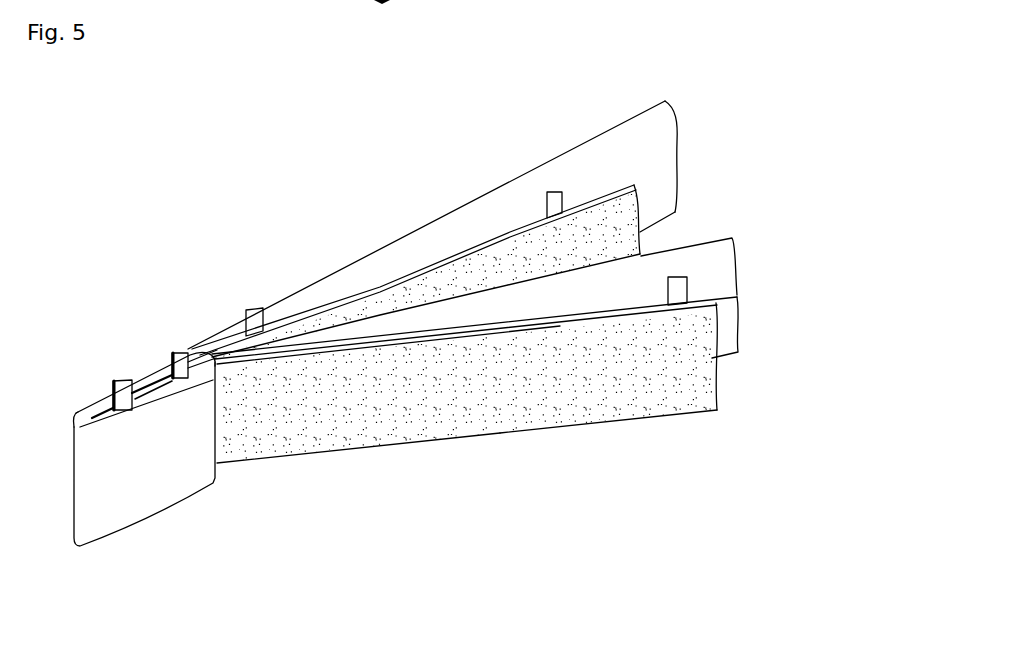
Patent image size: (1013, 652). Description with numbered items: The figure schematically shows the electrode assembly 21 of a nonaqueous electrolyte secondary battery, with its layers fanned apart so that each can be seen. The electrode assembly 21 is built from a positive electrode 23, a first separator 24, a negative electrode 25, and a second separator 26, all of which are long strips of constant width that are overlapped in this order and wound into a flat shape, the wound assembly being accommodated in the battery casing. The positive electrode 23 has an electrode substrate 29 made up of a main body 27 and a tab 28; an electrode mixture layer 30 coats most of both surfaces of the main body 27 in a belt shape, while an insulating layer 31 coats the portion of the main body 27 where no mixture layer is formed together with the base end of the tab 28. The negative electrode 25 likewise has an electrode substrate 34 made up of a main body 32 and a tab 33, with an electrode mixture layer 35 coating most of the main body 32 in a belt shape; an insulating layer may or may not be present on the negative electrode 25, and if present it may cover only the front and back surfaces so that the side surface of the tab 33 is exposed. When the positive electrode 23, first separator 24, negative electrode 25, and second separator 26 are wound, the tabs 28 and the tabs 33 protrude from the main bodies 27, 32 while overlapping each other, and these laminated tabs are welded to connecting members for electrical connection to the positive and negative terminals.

The electrode assembly 21 is at (225, 165).
The positive electrode 23 is at (546, 438).
The first separator 24 is at (743, 247).
The negative electrode 25 is at (536, 223).
The second separator 26 is at (534, 220).
The main body 27 is at (605, 421).
The tab 28 is at (116, 380).
The electrode substrate 29 is at (717, 402).
The electrode mixture layer 30 is at (512, 420).
The insulating layer 31 is at (737, 295).
The main body 32 is at (418, 220).
The tab 33 is at (180, 352).
The electrode substrate 34 is at (417, 230).
The electrode mixture layer 35 is at (464, 252).